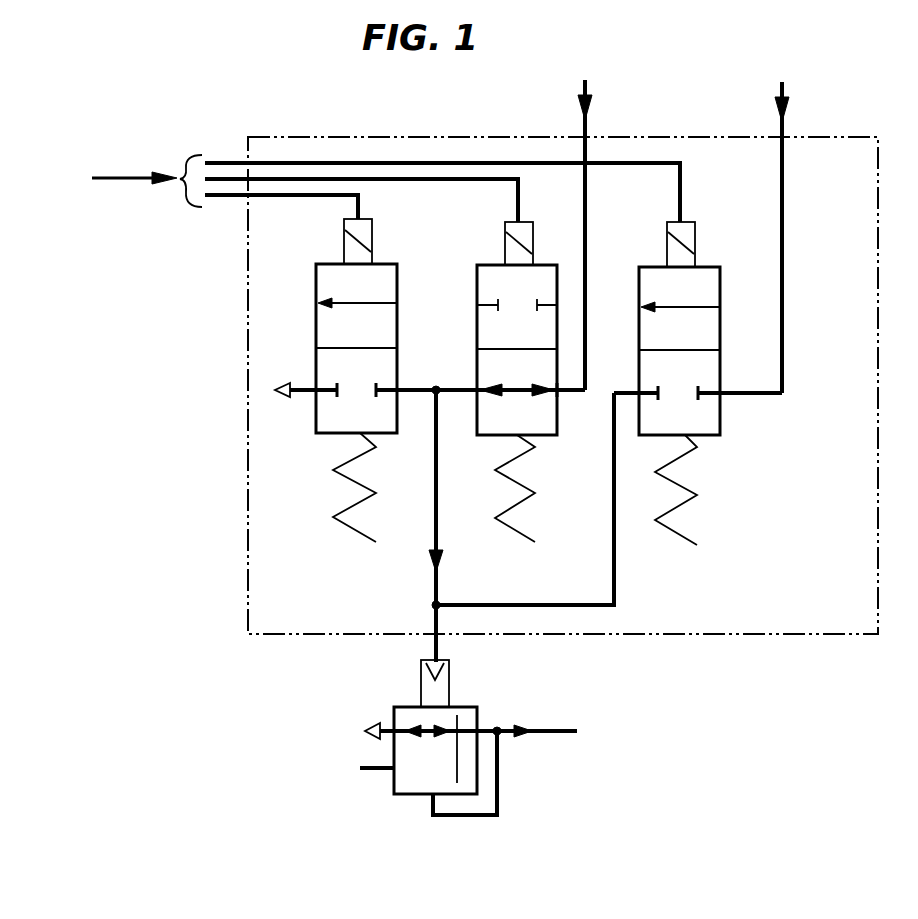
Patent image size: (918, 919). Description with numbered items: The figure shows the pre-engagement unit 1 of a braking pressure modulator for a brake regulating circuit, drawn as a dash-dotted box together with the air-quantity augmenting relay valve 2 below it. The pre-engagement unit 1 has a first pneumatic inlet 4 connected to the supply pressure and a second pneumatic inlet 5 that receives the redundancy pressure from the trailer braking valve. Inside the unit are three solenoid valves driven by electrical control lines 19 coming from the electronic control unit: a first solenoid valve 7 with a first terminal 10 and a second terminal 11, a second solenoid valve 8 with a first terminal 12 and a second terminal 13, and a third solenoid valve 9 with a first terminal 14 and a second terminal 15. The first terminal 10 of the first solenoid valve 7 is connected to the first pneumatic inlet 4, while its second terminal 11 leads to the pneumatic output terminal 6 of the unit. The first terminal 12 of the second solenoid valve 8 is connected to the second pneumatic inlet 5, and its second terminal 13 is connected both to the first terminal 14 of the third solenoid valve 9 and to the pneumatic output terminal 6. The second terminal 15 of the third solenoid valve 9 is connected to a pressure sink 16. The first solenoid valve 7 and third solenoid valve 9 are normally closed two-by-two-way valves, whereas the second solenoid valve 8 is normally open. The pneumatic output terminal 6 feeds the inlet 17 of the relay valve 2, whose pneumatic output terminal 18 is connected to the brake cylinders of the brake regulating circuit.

The pre-engagement unit 1 is at (742, 717).
The relay valve 2 is at (415, 783).
The first pneumatic inlet 4 is at (788, 97).
The second pneumatic inlet 5 is at (592, 92).
The pneumatic output terminal 6 is at (432, 636).
The first solenoid valve 7 is at (716, 452).
The second solenoid valve 8 is at (551, 452).
The third solenoid valve 9 is at (320, 457).
The first terminal 10 is at (722, 396).
The second terminal 11 is at (630, 390).
The first terminal 12 is at (560, 393).
The second terminal 13 is at (477, 388).
The first terminal 14 is at (405, 395).
The second terminal 15 is at (320, 386).
The pressure sink 16 is at (282, 398).
The inlet 17 is at (442, 648).
The pneumatic output terminal 18 is at (560, 733).
The electrical control lines 19 is at (110, 180).